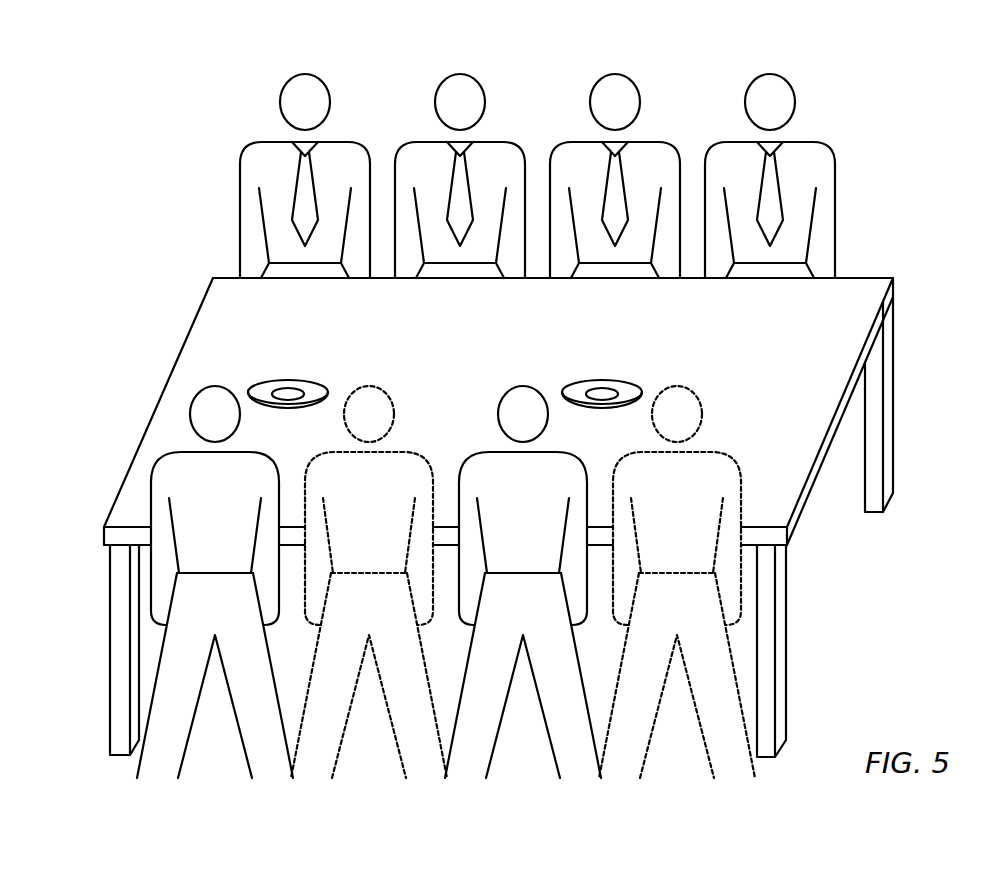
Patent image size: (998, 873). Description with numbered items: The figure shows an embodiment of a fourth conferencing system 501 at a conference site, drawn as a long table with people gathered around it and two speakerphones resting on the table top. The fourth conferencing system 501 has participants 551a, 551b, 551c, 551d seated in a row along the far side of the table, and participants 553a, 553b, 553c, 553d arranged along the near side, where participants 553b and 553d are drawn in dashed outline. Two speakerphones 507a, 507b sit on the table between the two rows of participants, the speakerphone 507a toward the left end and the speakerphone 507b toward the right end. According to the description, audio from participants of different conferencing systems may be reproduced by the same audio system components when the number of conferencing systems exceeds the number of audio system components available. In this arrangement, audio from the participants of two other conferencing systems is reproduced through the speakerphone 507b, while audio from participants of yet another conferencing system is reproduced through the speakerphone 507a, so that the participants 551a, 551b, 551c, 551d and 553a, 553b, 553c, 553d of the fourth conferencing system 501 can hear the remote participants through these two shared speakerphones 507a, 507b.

The fourth conferencing system 501 is at (123, 96).
The speakerphone 507a is at (298, 380).
The speakerphone 507b is at (612, 380).
The participant 551a is at (308, 74).
The participant 551b is at (463, 74).
The participant 551c is at (618, 74).
The participant 551d is at (773, 74).
The participant 553a is at (180, 771).
The participant 553b is at (334, 771).
The participant 553c is at (488, 771).
The participant 553d is at (642, 771).